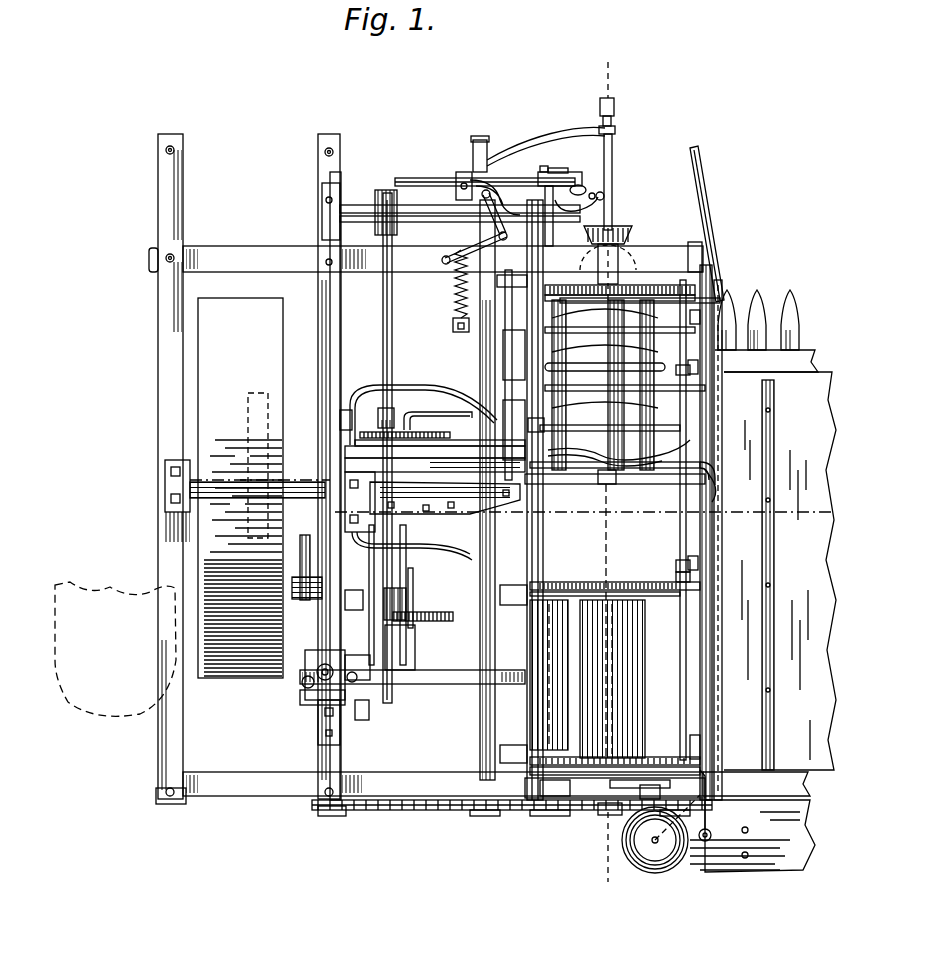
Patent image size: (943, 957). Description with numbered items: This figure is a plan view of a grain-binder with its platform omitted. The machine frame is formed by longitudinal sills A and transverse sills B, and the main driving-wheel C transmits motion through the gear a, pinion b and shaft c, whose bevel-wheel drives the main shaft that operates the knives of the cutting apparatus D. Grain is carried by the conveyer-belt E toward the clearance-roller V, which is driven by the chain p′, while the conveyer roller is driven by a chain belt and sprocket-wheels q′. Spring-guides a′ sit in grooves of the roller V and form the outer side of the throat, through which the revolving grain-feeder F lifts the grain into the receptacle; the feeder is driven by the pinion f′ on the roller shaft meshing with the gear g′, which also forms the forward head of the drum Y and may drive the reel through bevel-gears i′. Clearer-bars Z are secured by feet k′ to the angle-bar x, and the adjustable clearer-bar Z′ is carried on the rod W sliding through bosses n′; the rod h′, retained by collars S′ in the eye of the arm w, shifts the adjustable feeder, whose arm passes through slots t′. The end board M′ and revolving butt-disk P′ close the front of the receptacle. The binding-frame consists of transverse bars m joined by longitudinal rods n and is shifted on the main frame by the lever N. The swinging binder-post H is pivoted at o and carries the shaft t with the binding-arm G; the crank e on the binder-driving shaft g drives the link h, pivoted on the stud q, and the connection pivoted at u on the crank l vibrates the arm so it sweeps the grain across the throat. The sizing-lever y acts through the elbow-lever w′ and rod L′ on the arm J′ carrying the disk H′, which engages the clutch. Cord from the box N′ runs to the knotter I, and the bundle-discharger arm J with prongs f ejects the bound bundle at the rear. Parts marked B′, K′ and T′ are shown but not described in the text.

The longitudinal sills A is at (248, 469).
The transverse sills B is at (466, 510).
The bracket on post B′ is at (328, 428).
The main driving-wheel C is at (240, 488).
The gear a is at (348, 822).
The pinion b is at (266, 604).
The shaft c is at (305, 585).
The angle-bar x is at (700, 652).
The binder-driving shaft g is at (392, 300).
The crank e is at (405, 192).
The link h is at (446, 178).
The transverse bars m is at (372, 208).
The stud q is at (462, 172).
The pivot o is at (480, 143).
The arm w is at (532, 143).
The collars S′ is at (616, 132).
The rod h′ is at (612, 180).
The sizing-lever y is at (609, 472).
The bevel-gears i′ is at (632, 234).
The swinging binder-post H is at (544, 228).
The guide rail K′ is at (480, 338).
The elbow-lever w′ is at (452, 254).
The shaft t is at (548, 170).
The crank l is at (560, 170).
The stud u is at (580, 184).
The gear g′ is at (620, 305).
The pinion f′ is at (530, 302).
The spring-guides a′ is at (526, 330).
The grain-feeder F is at (657, 356).
The clearer-bars Z is at (702, 388).
The feet k′ is at (699, 372).
The adjustable clearer-bar Z′ is at (706, 468).
The binding-arm G is at (615, 487).
The slots t′ is at (596, 622).
The rod W is at (661, 554).
The bosses n′ is at (665, 571).
The clearance-roller V is at (549, 675).
The drum Y is at (612, 679).
The side post T′ is at (712, 674).
The conveyer-belt E is at (763, 622).
The cutting apparatus D is at (766, 331).
The end board M′ is at (700, 300).
The butt-disk P′ is at (722, 302).
The chain belt and sprocket-wheels q′ is at (701, 320).
The chain p′ is at (445, 812).
The cord box N′ is at (666, 870).
The rod L′ is at (423, 403).
The teeth or prongs f is at (414, 386).
The disk H′ is at (384, 418).
The arm J′ is at (420, 418).
The knotter I is at (435, 482).
The bundle-discharger arm J is at (431, 573).
The longitudinal rods n is at (349, 351).
The lever N is at (306, 535).